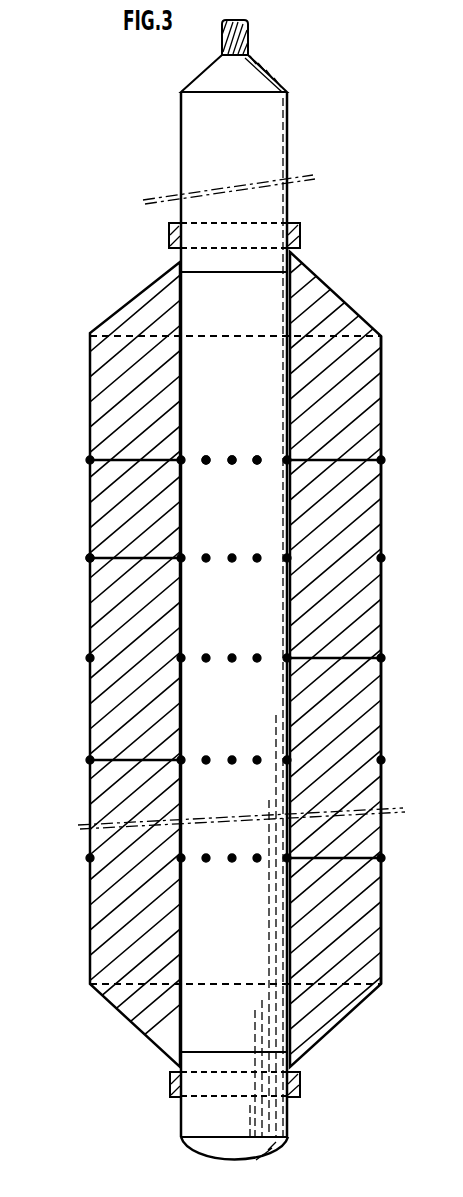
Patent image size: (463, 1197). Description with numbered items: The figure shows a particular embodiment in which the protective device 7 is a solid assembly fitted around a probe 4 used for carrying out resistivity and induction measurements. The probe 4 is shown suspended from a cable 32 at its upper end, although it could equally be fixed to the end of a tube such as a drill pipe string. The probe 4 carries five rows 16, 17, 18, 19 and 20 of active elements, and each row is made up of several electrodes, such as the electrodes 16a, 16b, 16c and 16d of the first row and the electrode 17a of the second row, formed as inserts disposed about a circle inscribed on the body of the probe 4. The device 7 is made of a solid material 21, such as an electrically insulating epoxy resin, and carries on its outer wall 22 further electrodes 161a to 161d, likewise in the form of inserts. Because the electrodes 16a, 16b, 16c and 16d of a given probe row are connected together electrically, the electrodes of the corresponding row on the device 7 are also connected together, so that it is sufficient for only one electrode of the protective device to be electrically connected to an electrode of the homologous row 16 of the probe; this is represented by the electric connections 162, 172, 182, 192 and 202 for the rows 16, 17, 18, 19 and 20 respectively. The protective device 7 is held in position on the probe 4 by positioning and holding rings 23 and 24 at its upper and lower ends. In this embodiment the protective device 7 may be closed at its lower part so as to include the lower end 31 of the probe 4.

The probe 4 is at (205, 312).
The protective device 7 is at (74, 342).
The first row of active elements 16 is at (238, 478).
The electrode 16a is at (189, 451).
The electrode 16b is at (204, 472).
The electrode 16c is at (236, 454).
The electrode 16d is at (282, 457).
The electrode 161a is at (90, 460).
The electrode 161d is at (383, 462).
The electric connection 162 is at (350, 457).
The second row of active elements 17 is at (226, 571).
The electrode 17a is at (88, 560).
The electric connection 172 is at (120, 558).
The third row of active elements 18 is at (230, 672).
The electric connection 182 is at (353, 659).
The fourth row of active elements 19 is at (222, 747).
The electric connection 192 is at (130, 760).
The fifth row of active elements 20 is at (229, 875).
The electric connection 202 is at (352, 858).
The solid material 21 is at (325, 1007).
The outer wall 22 is at (383, 955).
The positioning and holding ring 23 is at (300, 248).
The positioning and holding ring 24 is at (302, 1078).
The lower end of probe 31 is at (283, 1147).
The cable 32 is at (248, 37).